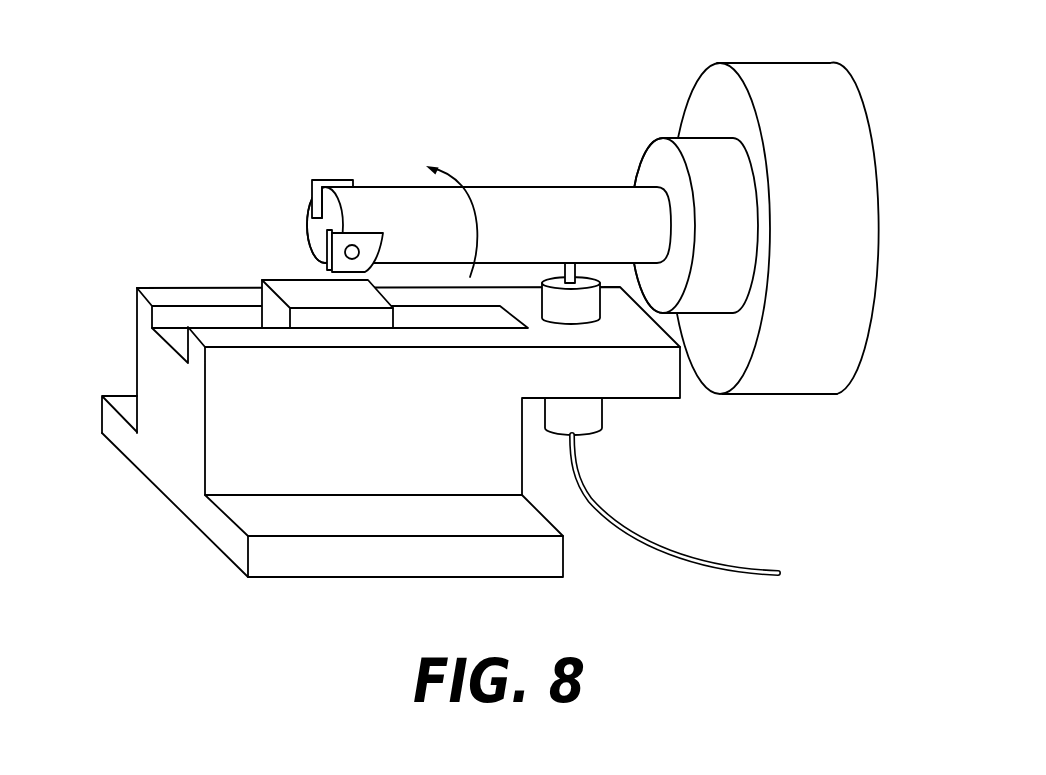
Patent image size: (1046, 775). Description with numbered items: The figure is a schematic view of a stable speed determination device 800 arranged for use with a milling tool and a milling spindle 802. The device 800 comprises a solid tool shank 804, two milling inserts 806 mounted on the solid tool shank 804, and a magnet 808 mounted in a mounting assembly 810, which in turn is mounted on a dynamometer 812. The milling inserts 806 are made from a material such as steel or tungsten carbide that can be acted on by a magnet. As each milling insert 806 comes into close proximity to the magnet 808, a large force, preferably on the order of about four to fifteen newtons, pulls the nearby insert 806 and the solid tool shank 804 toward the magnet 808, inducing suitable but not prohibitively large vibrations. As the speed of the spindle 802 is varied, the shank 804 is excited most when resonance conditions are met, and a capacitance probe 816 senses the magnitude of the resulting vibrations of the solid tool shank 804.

The stable speed determination device 800 is at (618, 74).
The milling spindle 802 is at (803, 360).
The solid tool shank 804 is at (512, 203).
The milling inserts 806 is at (308, 213).
The magnet 808 is at (293, 298).
The mounting assembly 810 is at (222, 336).
The dynamometer 812 is at (295, 422).
The capacitance probe 816 is at (573, 307).